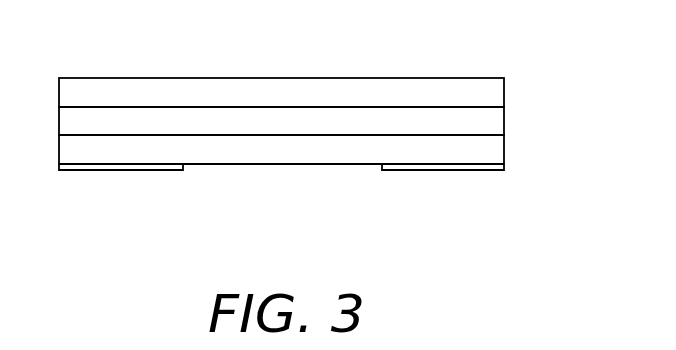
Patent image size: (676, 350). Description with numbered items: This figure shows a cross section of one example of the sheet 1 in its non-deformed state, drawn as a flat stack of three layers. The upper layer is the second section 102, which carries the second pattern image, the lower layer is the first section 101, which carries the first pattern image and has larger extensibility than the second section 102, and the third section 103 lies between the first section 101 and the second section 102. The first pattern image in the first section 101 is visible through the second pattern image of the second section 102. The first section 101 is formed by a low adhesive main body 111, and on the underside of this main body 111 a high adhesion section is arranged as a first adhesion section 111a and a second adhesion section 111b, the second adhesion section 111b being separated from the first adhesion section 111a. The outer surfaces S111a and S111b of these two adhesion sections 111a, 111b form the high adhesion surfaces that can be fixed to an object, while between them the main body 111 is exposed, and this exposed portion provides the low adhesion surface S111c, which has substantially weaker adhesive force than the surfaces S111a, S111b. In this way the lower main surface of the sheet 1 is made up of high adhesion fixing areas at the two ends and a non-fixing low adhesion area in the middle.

The sheet 1 is at (337, 66).
The first section 101 is at (513, 135).
The second section 102 is at (513, 78).
The third section 103 is at (513, 107).
The main body 111 is at (308, 152).
The first adhesion section 111a is at (150, 170).
The second adhesion section 111b is at (477, 170).
The surface of first electrode portion S111a is at (80, 170).
The surface of second electrode portion S111b is at (410, 170).
The low adhesion surface S111c is at (238, 164).